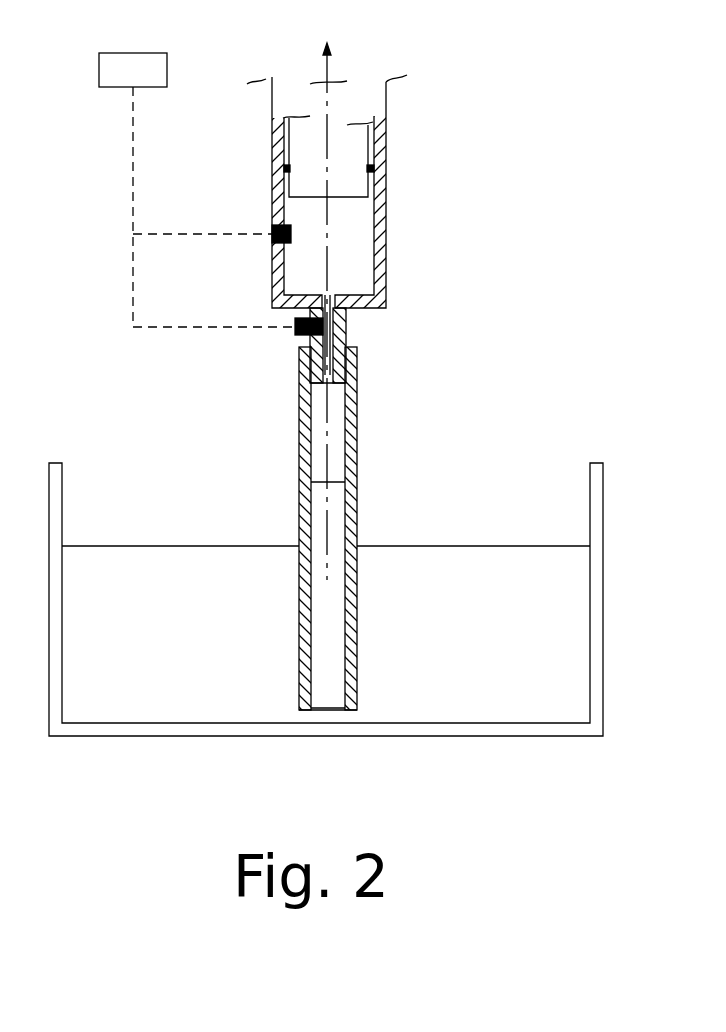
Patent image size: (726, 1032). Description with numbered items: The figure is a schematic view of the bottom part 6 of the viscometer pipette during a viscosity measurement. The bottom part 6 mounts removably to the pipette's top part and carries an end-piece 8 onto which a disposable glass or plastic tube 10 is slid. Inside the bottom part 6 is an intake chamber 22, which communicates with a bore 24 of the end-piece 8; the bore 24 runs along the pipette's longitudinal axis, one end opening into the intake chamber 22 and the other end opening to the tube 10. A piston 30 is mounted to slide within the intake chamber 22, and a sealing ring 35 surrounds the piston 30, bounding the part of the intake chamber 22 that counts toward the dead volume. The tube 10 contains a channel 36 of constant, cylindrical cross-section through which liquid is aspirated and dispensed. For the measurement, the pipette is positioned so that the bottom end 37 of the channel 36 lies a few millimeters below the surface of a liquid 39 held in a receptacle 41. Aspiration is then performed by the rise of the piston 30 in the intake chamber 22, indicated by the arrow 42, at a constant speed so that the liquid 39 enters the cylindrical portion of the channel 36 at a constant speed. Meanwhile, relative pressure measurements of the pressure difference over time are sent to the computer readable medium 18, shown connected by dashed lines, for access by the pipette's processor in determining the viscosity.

The bottom part 6 is at (450, 157).
The end-piece 8 is at (346, 323).
The tube 10 is at (357, 473).
The computer readable medium 18 is at (98, 67).
The intake chamber 22 is at (360, 243).
The bore 24 is at (312, 395).
The piston 30 is at (360, 153).
The sealing ring 35 is at (286, 168).
The channel 36 is at (333, 427).
The bottom end 37 is at (338, 710).
The liquid 39 is at (497, 664).
The receptacle 41 is at (603, 473).
The arrow 42 is at (336, 62).